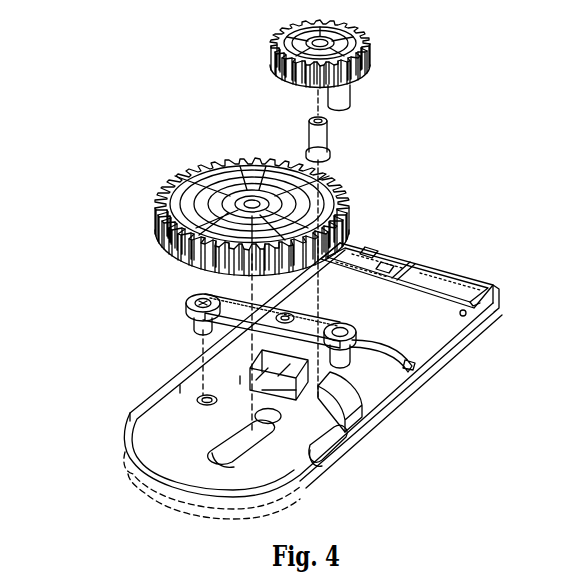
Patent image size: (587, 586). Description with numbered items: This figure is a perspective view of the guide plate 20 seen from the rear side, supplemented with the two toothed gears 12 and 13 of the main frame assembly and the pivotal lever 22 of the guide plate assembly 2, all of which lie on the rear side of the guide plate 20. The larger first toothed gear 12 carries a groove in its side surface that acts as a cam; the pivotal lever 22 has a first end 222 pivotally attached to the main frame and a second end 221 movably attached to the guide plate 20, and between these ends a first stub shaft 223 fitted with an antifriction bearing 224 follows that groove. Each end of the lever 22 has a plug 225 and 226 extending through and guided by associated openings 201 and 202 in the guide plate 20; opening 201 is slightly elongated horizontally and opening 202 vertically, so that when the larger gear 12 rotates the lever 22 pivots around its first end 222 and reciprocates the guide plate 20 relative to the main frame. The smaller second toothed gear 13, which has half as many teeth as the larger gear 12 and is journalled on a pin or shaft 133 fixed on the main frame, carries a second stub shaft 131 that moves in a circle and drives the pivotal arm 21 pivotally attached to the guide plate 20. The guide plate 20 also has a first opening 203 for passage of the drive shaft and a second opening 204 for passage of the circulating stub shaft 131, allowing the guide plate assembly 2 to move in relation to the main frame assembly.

The guide plate assembly 2 is at (316, 274).
The guide plate 20 is at (480, 337).
The opening 201 is at (197, 400).
The opening 202 is at (323, 450).
The first opening 203 is at (216, 456).
The second opening 204 is at (377, 437).
The pivotal arm 21 is at (380, 392).
The pivotal lever 22 is at (204, 300).
The second end 221 is at (200, 296).
The first end 222 is at (413, 270).
The first stub shaft 223 is at (370, 250).
The antifriction bearing 224 is at (385, 267).
The plug 225 is at (198, 326).
The plug 226 is at (340, 378).
The first toothed gear 12 is at (150, 184).
The second toothed gear 13 is at (260, 44).
The second stub shaft 131 is at (350, 100).
The pin or shaft 133 is at (326, 137).